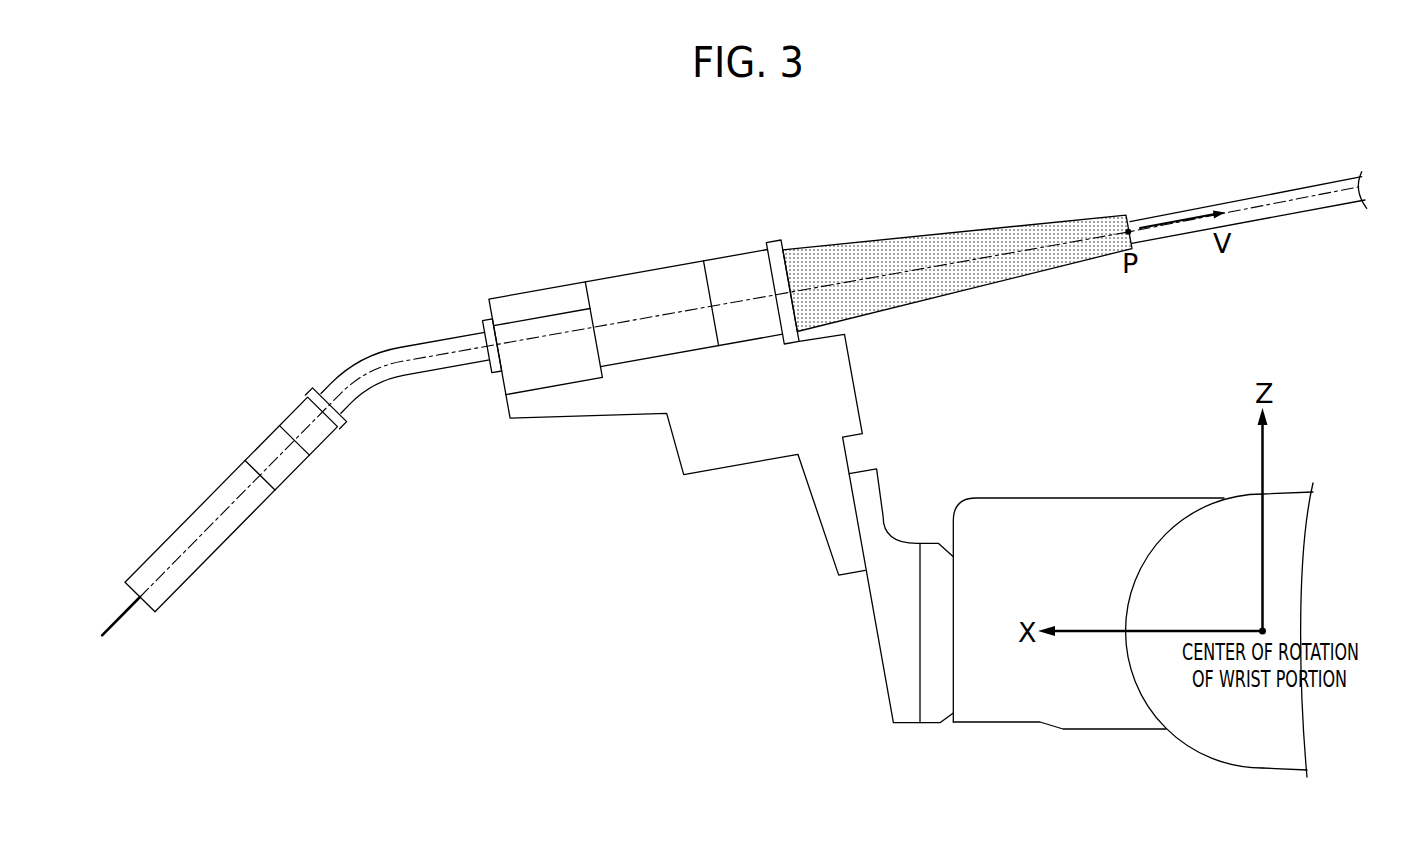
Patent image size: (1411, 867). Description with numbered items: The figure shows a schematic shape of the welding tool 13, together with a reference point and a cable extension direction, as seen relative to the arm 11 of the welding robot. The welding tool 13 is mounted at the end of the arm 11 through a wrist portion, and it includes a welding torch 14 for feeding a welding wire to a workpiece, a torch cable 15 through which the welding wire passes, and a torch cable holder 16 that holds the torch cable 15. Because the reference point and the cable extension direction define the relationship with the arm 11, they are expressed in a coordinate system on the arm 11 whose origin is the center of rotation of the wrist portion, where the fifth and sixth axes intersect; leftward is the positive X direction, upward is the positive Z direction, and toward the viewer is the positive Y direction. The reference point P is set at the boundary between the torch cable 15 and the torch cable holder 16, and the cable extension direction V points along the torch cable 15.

The arm 11 is at (1087, 730).
The welding tool 13 is at (470, 202).
The welding torch 14 is at (210, 493).
The torch cable 15 is at (1300, 190).
The torch cable holder 16 is at (902, 242).